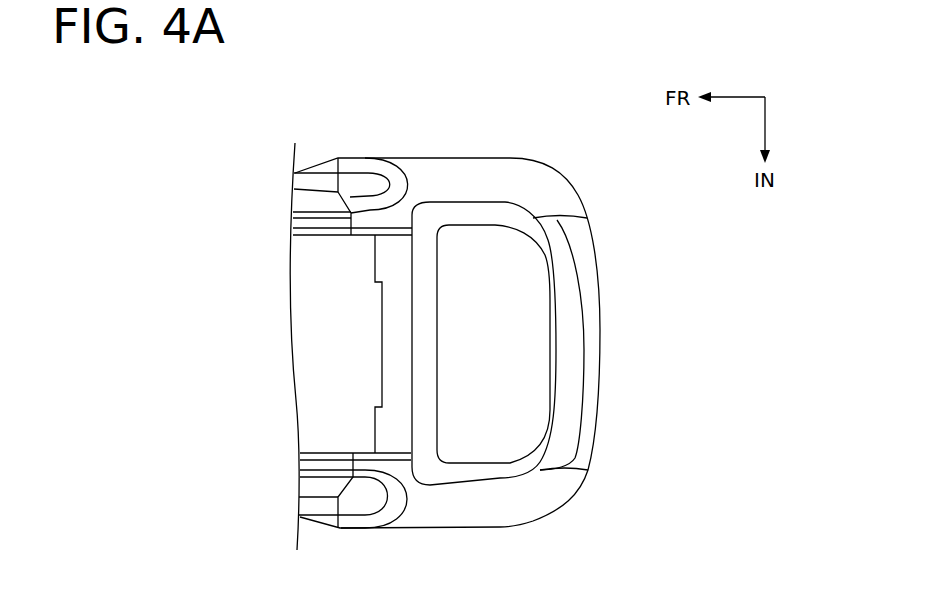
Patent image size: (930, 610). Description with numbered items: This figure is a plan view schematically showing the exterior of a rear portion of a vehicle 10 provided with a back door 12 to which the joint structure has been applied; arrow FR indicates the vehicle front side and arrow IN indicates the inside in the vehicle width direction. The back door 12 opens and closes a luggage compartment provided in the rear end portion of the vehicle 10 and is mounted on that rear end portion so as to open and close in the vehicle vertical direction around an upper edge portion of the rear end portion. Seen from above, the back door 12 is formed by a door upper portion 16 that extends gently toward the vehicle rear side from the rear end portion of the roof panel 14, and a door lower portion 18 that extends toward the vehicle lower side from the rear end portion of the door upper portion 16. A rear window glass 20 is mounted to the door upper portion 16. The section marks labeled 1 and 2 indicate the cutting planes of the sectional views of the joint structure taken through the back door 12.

The vehicle 10 is at (450, 321).
The back door 12 is at (604, 301).
The roof panel 14 is at (317, 342).
The door upper portion 16 is at (510, 259).
The door lower portion 18 is at (597, 333).
The rear window glass 20 is at (530, 388).
The section line 1- 1 is at (485, 442).
The section line 2- 2 is at (394, 265).